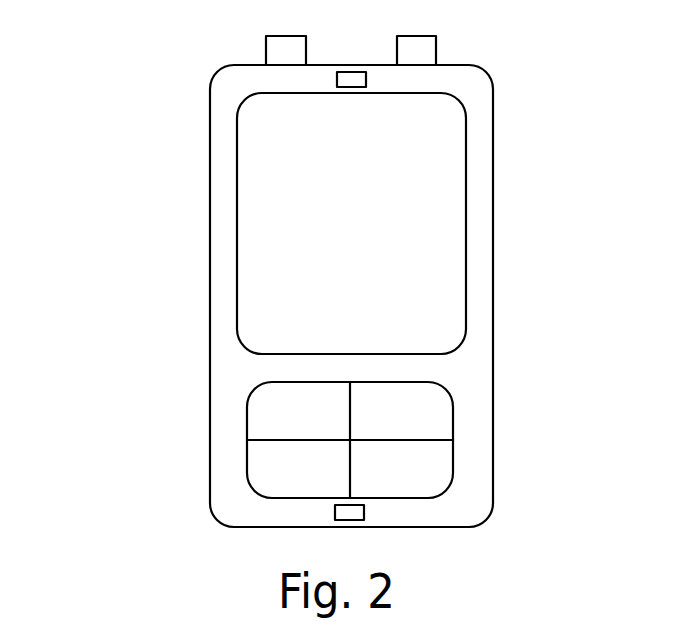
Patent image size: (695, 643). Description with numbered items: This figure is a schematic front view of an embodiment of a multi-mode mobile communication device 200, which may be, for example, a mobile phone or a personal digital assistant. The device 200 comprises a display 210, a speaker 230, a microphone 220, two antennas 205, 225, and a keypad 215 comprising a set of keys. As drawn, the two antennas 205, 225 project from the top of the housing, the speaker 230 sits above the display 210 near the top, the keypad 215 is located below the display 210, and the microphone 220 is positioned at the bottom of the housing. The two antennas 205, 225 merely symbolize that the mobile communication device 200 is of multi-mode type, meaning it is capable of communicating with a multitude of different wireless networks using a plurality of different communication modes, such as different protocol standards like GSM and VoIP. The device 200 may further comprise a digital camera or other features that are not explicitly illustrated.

The multi-mode mobile communication device 200 is at (196, 123).
The antenna 205 is at (266, 52).
The antenna 225 is at (436, 52).
The speaker 230 is at (366, 80).
The display 210 is at (237, 224).
The keypad 215 is at (247, 425).
The microphone 220 is at (335, 512).